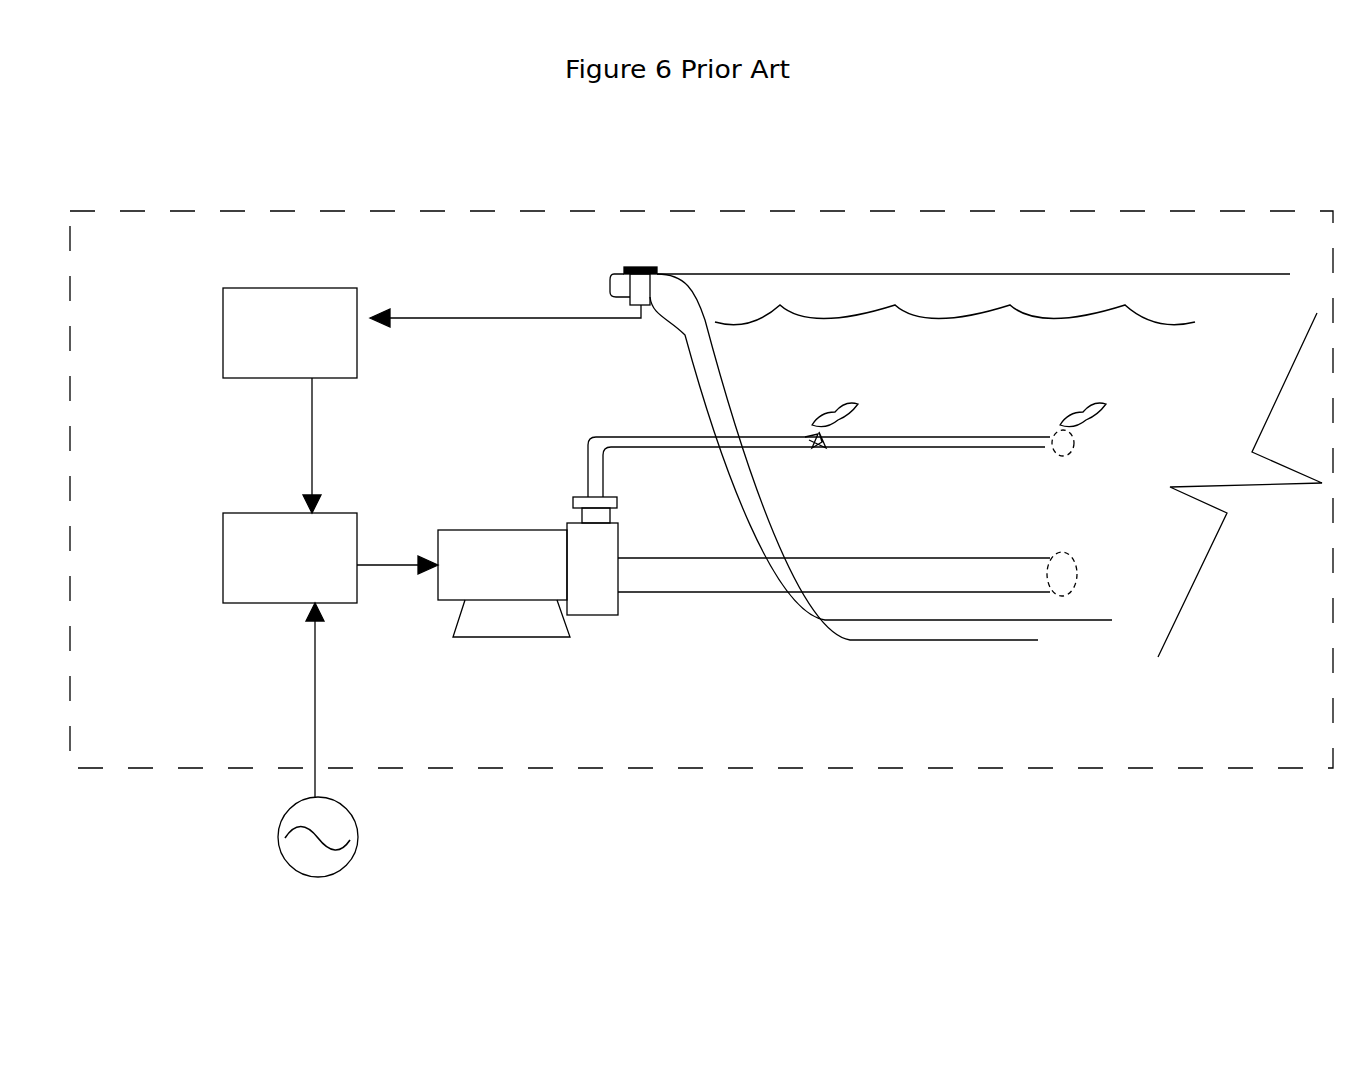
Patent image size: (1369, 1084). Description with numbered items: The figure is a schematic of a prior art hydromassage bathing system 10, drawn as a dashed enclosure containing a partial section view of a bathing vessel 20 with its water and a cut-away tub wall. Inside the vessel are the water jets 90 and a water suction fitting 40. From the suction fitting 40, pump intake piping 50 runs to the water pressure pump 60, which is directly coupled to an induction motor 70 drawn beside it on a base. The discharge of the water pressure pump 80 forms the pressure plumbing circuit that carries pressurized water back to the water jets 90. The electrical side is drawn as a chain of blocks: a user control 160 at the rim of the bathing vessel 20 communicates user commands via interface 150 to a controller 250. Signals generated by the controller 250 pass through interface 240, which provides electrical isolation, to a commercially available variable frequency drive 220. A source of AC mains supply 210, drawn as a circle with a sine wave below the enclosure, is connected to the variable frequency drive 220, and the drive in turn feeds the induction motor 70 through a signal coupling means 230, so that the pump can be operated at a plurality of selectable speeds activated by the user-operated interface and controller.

The bathing system 10 is at (933, 198).
The bathing vessel 20 is at (703, 402).
The water suction fitting 40 is at (1068, 565).
The pump intake piping 50 is at (680, 595).
The water pressure pump 60 is at (590, 615).
The induction motor 70 is at (508, 527).
The discharge of water pressure pump 80 is at (580, 458).
The water jets 90 is at (817, 453).
The interface 150 is at (512, 305).
The user control 160 is at (660, 268).
The AC mains supply 210 is at (365, 845).
The variable frequency drive 220 is at (222, 540).
The signal coupling means 230 is at (372, 568).
The interface 240 is at (305, 448).
The controller 250 is at (310, 288).